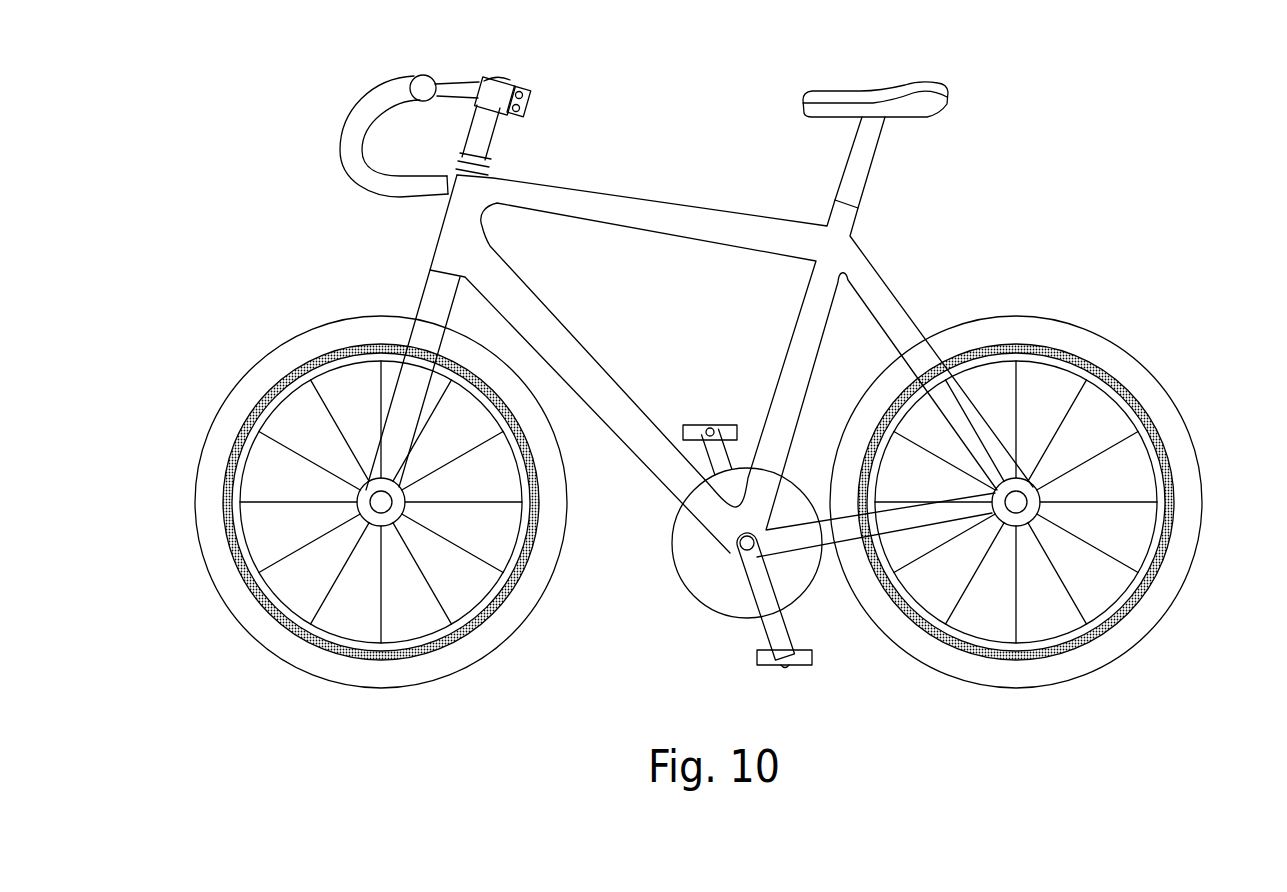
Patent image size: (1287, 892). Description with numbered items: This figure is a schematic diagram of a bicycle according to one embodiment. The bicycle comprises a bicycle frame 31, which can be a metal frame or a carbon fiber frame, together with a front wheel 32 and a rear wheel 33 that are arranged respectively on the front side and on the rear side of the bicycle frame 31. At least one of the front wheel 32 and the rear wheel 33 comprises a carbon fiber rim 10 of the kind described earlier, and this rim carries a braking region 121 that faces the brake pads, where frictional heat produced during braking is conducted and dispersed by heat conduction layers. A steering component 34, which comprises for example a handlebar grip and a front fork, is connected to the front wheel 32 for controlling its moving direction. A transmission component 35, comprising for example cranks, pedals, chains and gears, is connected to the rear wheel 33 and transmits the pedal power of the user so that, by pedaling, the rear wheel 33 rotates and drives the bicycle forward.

The carbon fiber rim 10 is at (227, 540).
The braking region 121 is at (225, 477).
The bicycle frame 31 is at (676, 201).
The front wheel 32 is at (258, 362).
The rear wheel 33 is at (1148, 372).
The steering component 34 is at (349, 116).
The transmission component 35 is at (708, 422).